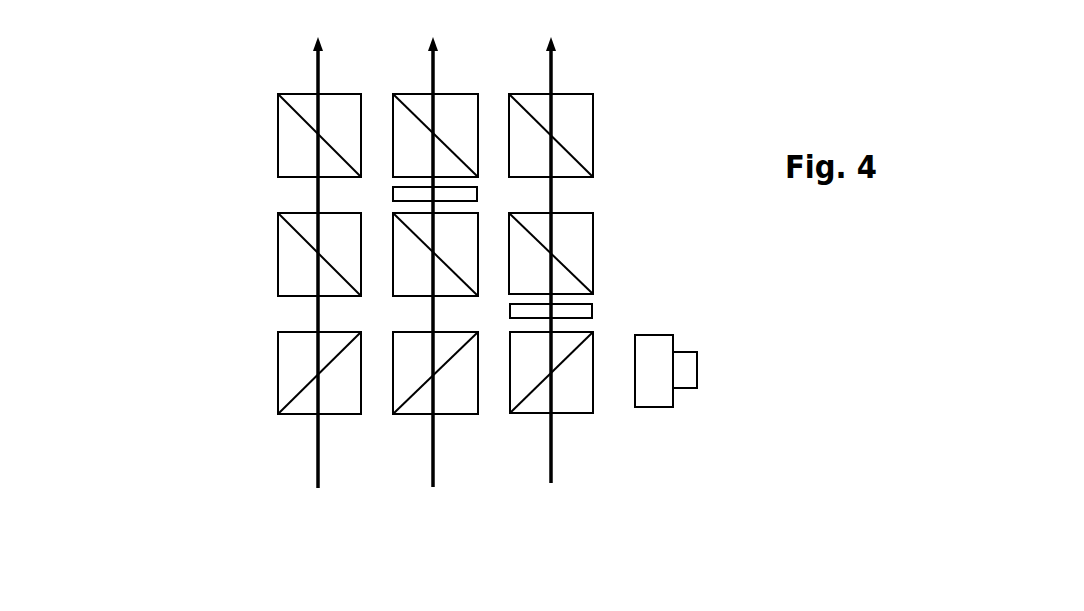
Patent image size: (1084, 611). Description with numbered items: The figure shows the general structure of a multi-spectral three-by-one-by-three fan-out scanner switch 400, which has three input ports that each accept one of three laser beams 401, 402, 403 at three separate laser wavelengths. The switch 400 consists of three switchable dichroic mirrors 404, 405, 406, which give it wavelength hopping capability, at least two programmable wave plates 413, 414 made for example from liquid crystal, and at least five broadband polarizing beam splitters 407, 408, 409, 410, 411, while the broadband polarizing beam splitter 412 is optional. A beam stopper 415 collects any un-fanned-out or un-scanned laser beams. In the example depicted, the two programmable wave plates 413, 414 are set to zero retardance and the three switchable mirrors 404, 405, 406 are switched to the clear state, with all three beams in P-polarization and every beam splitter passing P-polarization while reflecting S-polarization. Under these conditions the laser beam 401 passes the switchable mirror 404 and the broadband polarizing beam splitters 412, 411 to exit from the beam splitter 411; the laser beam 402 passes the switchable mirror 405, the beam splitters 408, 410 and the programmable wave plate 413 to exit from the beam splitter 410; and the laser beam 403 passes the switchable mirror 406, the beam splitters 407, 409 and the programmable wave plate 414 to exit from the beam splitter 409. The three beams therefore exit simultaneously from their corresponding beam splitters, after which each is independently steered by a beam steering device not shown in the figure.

The multi-spectral 3×(1×3) fan-out scanner switch 400 is at (113, 16).
The laser beam 401 is at (318, 462).
The laser beam 402 is at (438, 468).
The laser beam 403 is at (553, 483).
The switchable dichroic mirror 404 is at (287, 407).
The switchable dichroic mirror 405 is at (410, 400).
The switchable dichroic mirror 406 is at (573, 405).
The broadband polarizing beam splitter 407 is at (580, 262).
The broadband polarizing beam splitter 408 is at (412, 280).
The broadband polarizing beam splitter 409 is at (580, 130).
The broadband polarizing beam splitter 410 is at (452, 105).
The broadband polarizing beam splitter 411 is at (335, 125).
The broadband polarizing beam splitter 412 is at (292, 273).
The programmable wave plate 413 is at (410, 193).
The programmable wave plate 414 is at (577, 313).
The beam stopper 415 is at (692, 370).